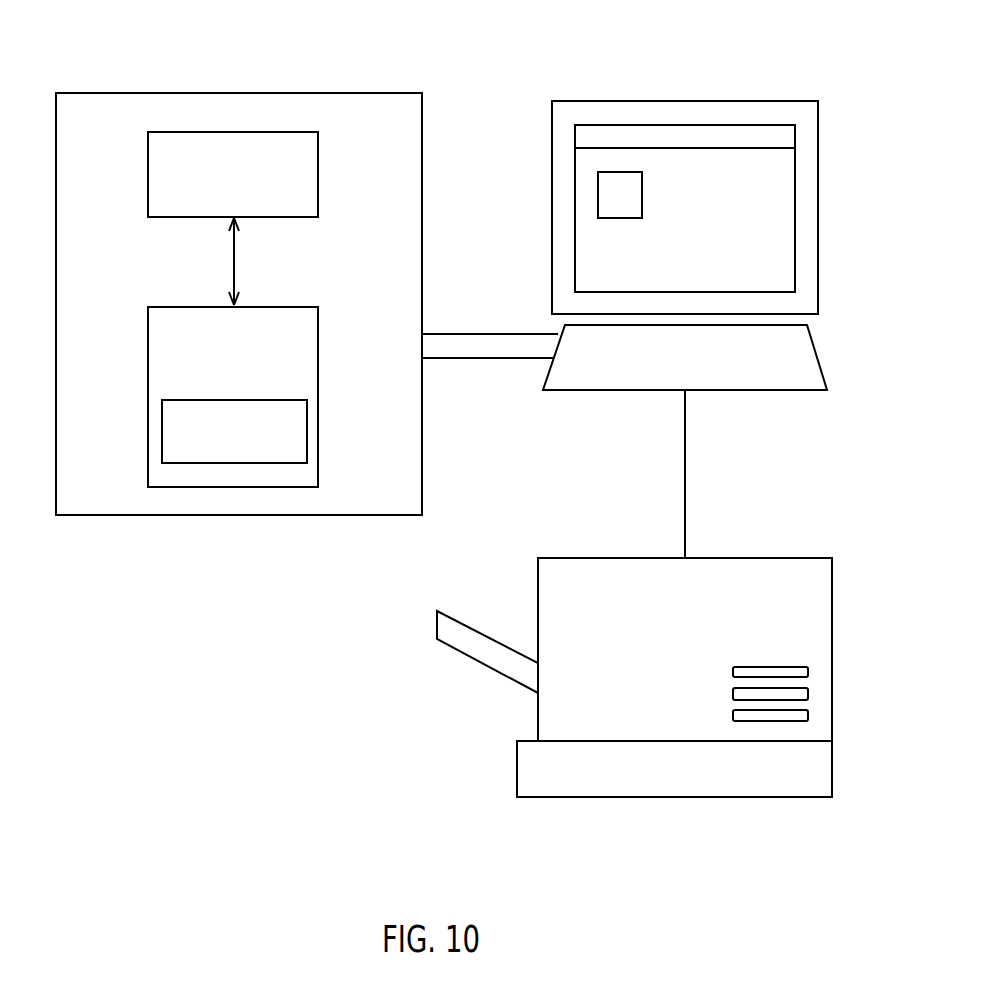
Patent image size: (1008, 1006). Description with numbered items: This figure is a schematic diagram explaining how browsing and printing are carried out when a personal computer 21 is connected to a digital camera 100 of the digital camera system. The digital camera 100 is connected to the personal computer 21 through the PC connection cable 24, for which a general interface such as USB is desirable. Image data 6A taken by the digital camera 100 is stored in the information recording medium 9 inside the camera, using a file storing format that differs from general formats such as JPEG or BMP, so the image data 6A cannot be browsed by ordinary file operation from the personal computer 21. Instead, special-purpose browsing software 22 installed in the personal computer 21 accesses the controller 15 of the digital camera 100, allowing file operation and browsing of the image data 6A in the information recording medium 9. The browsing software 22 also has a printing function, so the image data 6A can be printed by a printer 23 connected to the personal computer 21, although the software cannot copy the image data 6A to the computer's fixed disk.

The digital camera 100 is at (280, 92).
The controller 15 is at (193, 218).
The information recording medium 9 is at (293, 306).
The image data 6A is at (162, 428).
The PC connection cable 24 is at (467, 334).
The personal computer 21 is at (768, 101).
The browsing software 22 is at (778, 234).
The printer 23 is at (768, 558).